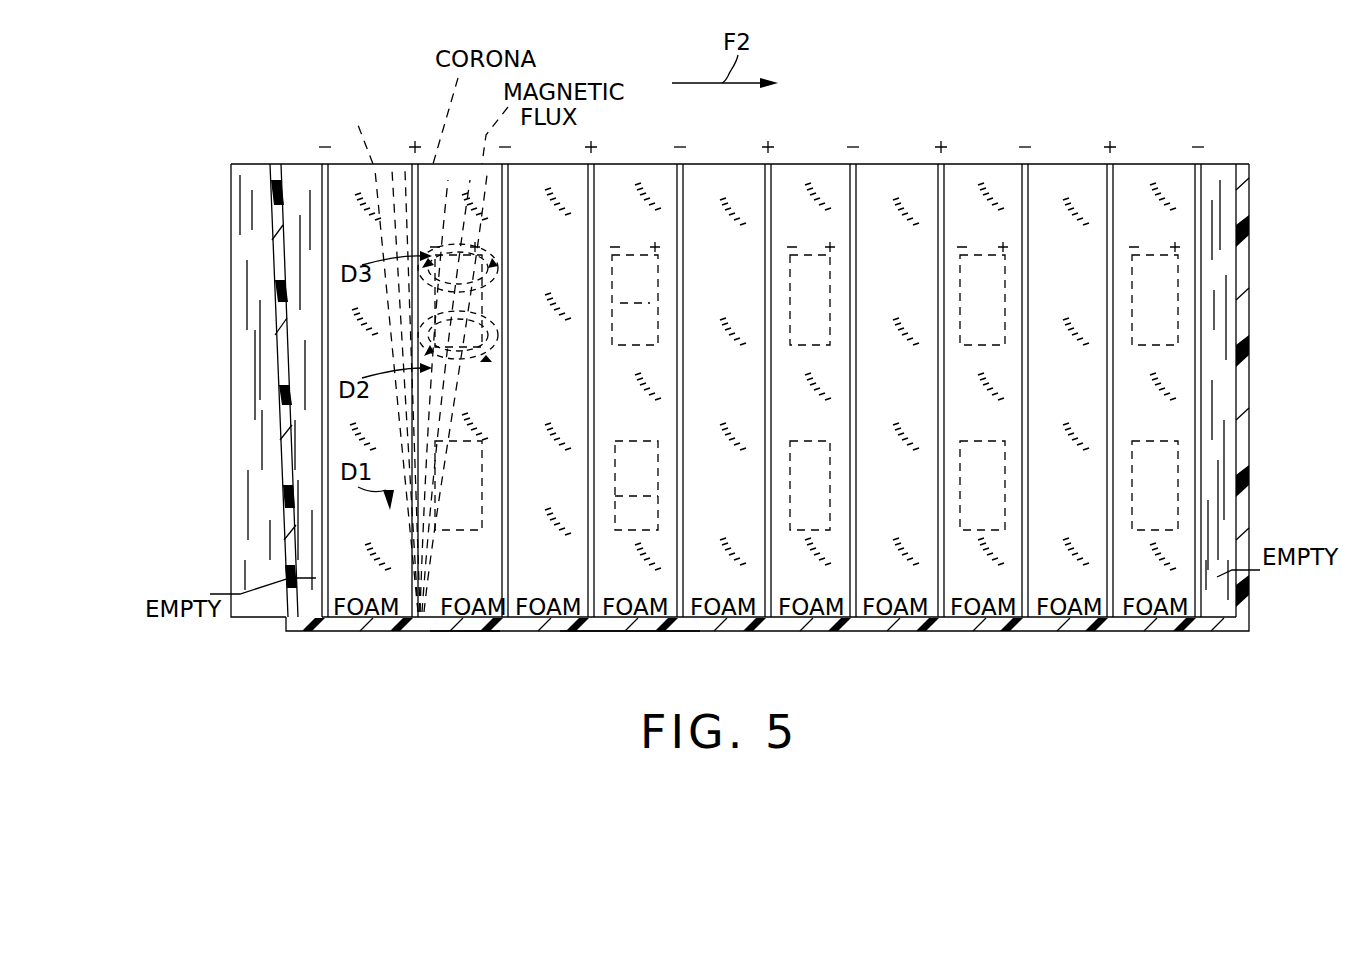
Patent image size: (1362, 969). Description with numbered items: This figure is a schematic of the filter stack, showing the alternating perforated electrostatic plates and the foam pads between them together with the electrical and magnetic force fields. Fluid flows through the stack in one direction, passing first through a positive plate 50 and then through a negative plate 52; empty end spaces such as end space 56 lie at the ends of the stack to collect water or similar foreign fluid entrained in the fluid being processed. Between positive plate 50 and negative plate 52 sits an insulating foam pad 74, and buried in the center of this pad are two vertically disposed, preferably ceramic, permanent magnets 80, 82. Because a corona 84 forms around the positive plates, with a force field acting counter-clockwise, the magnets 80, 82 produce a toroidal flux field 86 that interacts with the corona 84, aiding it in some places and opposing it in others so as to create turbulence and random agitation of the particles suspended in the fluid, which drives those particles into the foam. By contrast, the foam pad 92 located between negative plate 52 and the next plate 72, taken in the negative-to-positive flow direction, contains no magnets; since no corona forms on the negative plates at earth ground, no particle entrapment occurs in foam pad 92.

The perforated electrostatic plate 50 is at (293, 164).
The perforated electrostatic plate 52 is at (508, 619).
The end space 56 is at (1220, 164).
The plate 72 is at (590, 619).
The insulating foam pad 74 is at (472, 619).
The permanent magnet 80 is at (545, 296).
The permanent magnet 82 is at (546, 485).
The corona 84 is at (415, 356).
The toroidal flux field 86 is at (498, 240).
The foam pad 92 is at (560, 550).